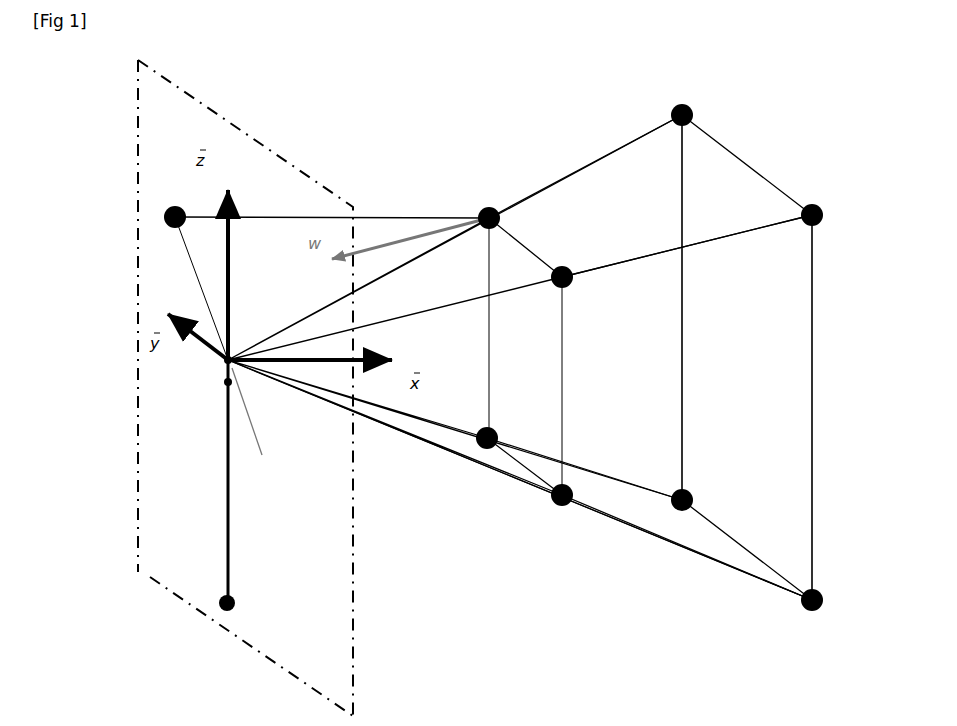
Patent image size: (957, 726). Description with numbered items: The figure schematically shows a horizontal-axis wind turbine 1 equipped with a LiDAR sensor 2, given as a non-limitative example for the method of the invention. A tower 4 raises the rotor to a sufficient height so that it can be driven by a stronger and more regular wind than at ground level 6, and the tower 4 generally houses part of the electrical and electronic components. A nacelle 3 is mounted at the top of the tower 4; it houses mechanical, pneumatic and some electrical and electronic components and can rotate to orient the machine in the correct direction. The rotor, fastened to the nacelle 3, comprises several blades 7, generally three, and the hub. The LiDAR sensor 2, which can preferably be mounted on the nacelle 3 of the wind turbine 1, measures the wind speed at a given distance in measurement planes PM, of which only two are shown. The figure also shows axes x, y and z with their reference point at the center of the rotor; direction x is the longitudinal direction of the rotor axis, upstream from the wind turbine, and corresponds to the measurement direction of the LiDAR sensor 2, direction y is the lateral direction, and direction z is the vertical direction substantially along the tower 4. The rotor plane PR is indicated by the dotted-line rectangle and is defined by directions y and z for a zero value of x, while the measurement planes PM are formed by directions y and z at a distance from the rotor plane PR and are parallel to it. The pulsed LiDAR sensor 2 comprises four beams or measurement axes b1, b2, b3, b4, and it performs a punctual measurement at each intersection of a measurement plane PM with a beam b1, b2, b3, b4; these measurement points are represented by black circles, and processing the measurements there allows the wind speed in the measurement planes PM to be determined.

The wind turbine 1 is at (268, 205).
The LiDAR sensor 2 is at (206, 362).
The nacelle 3 is at (225, 387).
The tower 4 is at (224, 504).
The ground level 6 is at (218, 598).
The blades 7 is at (258, 438).
The rotor plane PR is at (156, 593).
The measurement planes PM is at (529, 398).
The beam b1 is at (528, 186).
The beam b2 is at (758, 232).
The beam b3 is at (645, 542).
The beam b4 is at (428, 432).